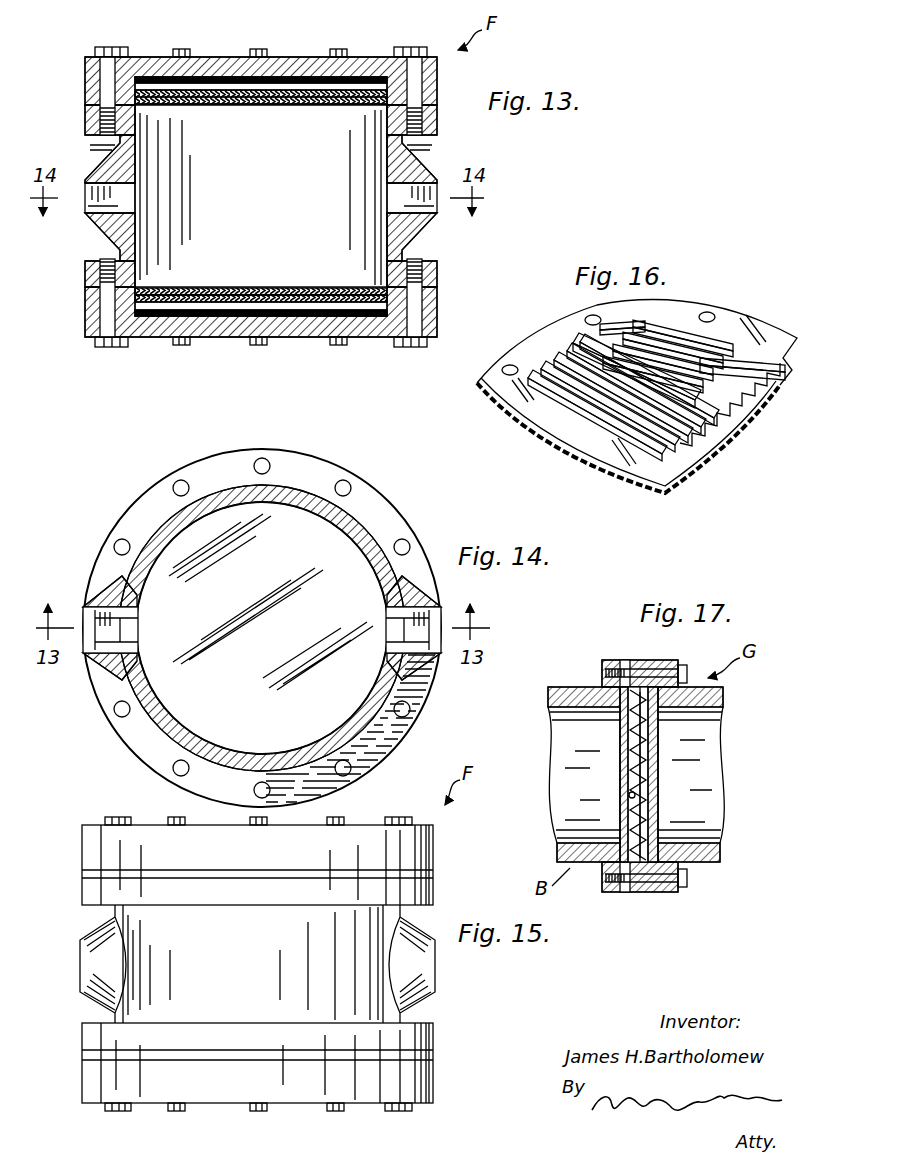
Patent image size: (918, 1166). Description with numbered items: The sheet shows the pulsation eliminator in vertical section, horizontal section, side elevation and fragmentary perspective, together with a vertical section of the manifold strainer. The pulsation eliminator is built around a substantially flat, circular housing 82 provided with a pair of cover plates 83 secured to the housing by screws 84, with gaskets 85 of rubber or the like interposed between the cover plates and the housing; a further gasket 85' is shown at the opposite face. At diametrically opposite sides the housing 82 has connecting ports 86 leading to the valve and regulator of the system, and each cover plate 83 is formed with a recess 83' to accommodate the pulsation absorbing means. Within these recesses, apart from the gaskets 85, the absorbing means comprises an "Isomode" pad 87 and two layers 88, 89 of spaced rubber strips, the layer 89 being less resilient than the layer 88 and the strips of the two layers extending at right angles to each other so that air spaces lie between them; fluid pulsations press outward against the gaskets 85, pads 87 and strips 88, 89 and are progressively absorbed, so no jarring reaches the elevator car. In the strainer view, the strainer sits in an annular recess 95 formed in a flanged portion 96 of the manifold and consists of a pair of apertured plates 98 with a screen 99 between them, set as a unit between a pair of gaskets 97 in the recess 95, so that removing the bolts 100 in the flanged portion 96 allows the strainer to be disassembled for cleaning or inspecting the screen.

In FIG. 13, the housing 82 is at (158, 264).
In FIG. 14, the housing 82 is at (152, 718).
In FIG. 15, the housing 82 is at (253, 964).
In FIG. 13, the cover plates 83 is at (256, 197).
In FIG. 15, the cover plates 83 is at (279, 964).
In FIG. 13, the recesses 83' is at (261, 205).
In FIG. 13, the screws 84 is at (408, 47).
In FIG. 15, the screws 84 is at (396, 817).
In FIG. 13, the gaskets 85 is at (296, 96).
In FIG. 14, the gaskets 85 is at (276, 628).
In FIG. 15, the gaskets 85 is at (279, 871).
In FIG. 16, the gaskets 85 is at (637, 396).
In FIG. 13, the lower flange 85' is at (283, 281).
In FIG. 15, the lower flange 85' is at (281, 1051).
In FIG. 13, the connecting ports 86 is at (90, 207).
In FIG. 14, the connecting ports 86 is at (92, 637).
In FIG. 15, the connecting ports 86 is at (80, 965).
In FIG. 13, the "Isomode" pad 87 is at (236, 104).
In FIG. 16, the "Isomode" pad 87 is at (600, 402).
In FIG. 13, the layer of strips 88 is at (285, 92).
In FIG. 16, the layer of strips 88 is at (585, 360).
In FIG. 13, the layer of strips 89 is at (215, 78).
In FIG. 16, the layer of strips 89 is at (690, 334).
In FIG. 17, the annular recess 95 is at (630, 893).
In FIG. 17, the flanged portion 96 is at (665, 895).
In FIG. 17, the gaskets 97 is at (628, 772).
In FIG. 17, the apertured plates 98 is at (658, 800).
In FIG. 17, the screen 99 is at (660, 812).
In FIG. 17, the bolts 100 is at (636, 665).